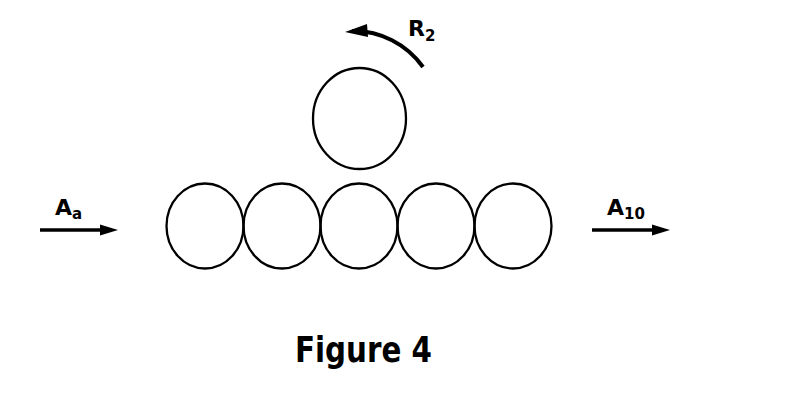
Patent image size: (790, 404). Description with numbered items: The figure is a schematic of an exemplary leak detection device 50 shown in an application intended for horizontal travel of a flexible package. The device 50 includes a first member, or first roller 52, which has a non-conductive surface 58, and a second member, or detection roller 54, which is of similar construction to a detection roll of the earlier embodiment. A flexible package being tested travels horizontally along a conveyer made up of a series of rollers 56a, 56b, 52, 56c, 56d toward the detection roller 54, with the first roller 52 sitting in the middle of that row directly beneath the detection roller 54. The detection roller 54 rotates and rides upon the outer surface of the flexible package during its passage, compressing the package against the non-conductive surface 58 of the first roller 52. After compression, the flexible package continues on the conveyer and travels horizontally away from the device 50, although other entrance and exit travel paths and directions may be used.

The leak detection device 50 is at (403, 187).
The first roller 52 is at (355, 269).
The detection roller 54 is at (314, 108).
The roller 56a is at (194, 269).
The roller 56b is at (288, 269).
The roller 56c is at (428, 269).
The roller 56d is at (522, 269).
The non-conductive surface 58 is at (407, 178).